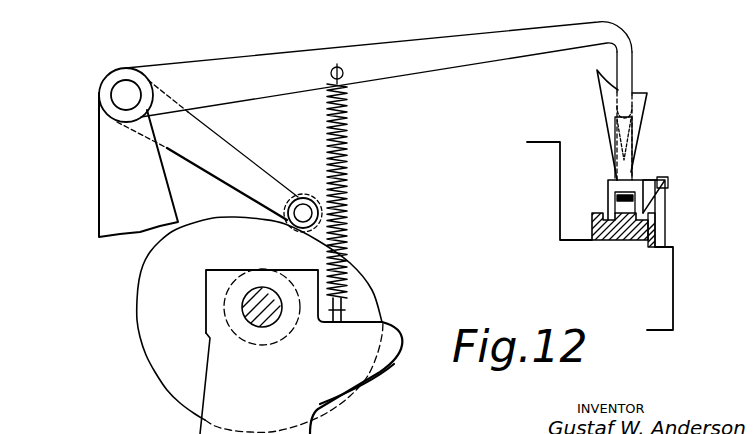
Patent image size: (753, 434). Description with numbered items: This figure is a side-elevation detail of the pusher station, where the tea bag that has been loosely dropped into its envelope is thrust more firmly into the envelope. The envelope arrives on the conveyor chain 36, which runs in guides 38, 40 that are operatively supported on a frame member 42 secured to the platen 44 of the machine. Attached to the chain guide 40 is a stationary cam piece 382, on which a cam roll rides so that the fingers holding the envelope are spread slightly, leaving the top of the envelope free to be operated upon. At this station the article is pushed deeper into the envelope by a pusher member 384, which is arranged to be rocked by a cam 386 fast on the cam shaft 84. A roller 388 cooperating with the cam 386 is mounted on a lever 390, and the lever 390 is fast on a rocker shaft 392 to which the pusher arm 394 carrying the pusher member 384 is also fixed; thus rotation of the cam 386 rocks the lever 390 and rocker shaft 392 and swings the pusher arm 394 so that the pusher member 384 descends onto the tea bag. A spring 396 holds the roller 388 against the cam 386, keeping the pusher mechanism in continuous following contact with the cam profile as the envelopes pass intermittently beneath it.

The rocker shaft 392 is at (112, 88).
The pusher arm 394 is at (233, 63).
The pusher member 384 is at (623, 68).
The lever 390 is at (222, 143).
The roller 388 is at (310, 198).
The spring 396 is at (347, 142).
The cam 386 is at (362, 285).
The cam shaft 84 is at (270, 321).
The conveyor chain 36 is at (665, 195).
The stationary cam piece 382 is at (663, 208).
The guide 38 is at (592, 227).
The chain guide 40 is at (655, 228).
The frame member 42 is at (559, 213).
The platen 44 is at (670, 280).